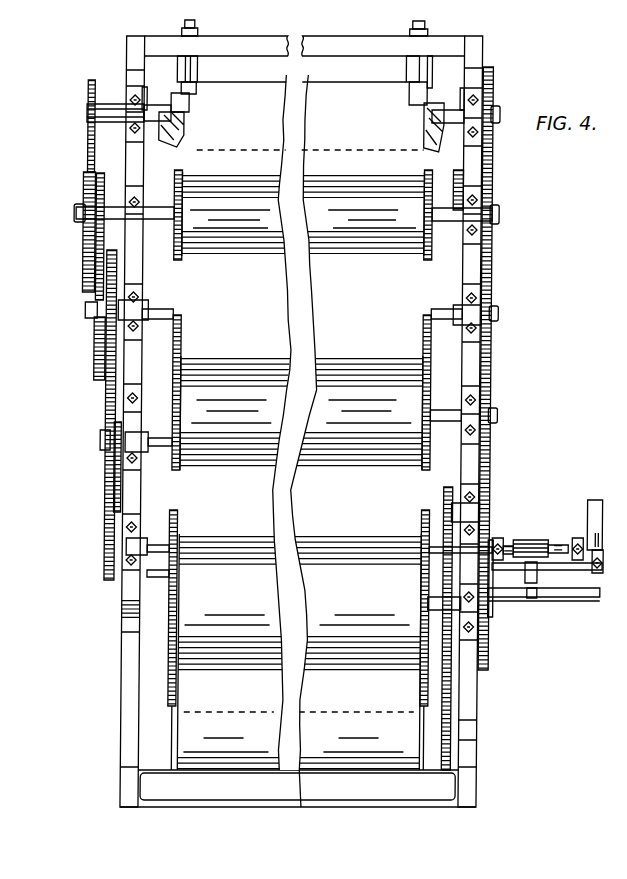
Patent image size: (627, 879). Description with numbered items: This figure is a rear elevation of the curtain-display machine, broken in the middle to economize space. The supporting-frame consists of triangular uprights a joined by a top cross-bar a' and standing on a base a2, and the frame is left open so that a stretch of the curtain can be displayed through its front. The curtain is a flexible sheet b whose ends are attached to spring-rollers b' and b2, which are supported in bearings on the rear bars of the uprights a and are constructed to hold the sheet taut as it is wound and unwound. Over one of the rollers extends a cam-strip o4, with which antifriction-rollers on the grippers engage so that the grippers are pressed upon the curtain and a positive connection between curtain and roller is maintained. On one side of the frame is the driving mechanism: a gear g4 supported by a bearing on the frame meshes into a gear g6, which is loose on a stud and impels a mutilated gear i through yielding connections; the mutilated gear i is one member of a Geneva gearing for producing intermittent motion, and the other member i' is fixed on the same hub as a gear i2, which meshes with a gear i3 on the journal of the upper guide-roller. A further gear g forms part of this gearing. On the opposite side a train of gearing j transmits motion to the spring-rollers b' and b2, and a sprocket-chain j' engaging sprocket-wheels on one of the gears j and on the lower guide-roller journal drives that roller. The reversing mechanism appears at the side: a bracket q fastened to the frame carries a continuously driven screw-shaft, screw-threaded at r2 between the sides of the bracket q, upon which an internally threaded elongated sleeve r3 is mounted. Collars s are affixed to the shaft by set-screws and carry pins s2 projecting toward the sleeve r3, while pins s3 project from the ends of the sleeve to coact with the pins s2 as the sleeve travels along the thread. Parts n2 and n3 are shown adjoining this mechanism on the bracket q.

The top cross-bar a' is at (305, 37).
The triangular uprights a is at (287, 215).
The base a2 is at (191, 786).
The curtain sheet b is at (311, 116).
The spring-roller b' is at (301, 389).
The spring-roller b2 is at (298, 640).
The cam-strip o4 is at (197, 88).
The mutilated gear i is at (81, 341).
The Geneva gearing member i' is at (101, 225).
The gear i2 is at (87, 193).
The gear i3 is at (90, 105).
The gear g is at (123, 618).
The gear g4 is at (118, 426).
The gear g6 is at (112, 290).
The train of gearing j is at (490, 368).
The sprocket-chain j' is at (464, 628).
The collars s is at (500, 538).
The pins s2 is at (566, 606).
The pins s3 is at (556, 542).
The screw-thread r2 is at (555, 545).
The elongated sleeve r3 is at (533, 541).
The bracket n2 is at (606, 536).
The shaft n3 is at (575, 600).
The bracket q is at (525, 606).